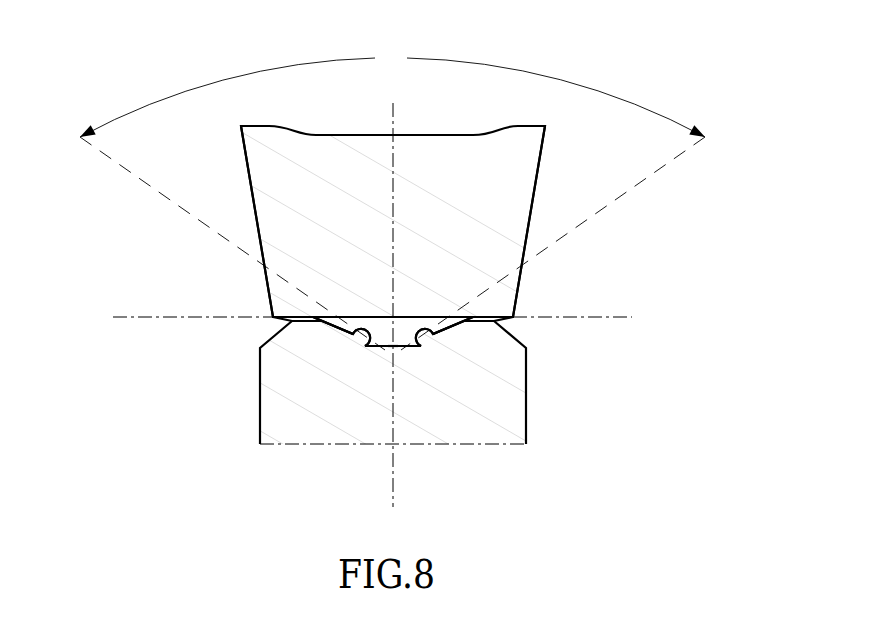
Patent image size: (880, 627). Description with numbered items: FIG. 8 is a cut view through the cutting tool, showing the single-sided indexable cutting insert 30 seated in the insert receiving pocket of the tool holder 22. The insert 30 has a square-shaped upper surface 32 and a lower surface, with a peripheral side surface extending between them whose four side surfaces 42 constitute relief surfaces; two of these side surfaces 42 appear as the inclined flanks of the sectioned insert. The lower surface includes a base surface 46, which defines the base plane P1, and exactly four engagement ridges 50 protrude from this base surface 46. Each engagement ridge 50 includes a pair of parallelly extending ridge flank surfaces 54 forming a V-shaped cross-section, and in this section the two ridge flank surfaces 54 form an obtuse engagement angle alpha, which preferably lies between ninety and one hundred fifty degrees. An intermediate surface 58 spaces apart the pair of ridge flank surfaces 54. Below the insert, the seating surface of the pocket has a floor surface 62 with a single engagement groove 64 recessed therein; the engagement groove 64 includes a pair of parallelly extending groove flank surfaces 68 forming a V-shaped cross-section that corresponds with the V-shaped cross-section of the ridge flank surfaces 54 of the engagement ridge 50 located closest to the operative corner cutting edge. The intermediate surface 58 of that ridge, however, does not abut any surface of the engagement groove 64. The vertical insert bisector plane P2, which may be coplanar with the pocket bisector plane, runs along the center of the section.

The tool holder 22 is at (463, 403).
The cutting insert 30 is at (500, 165).
The upper surface 32 is at (430, 133).
The side surfaces 42 is at (255, 217).
The base surface 46 is at (277, 318).
The engagement ridge 50 is at (375, 349).
The ridge flank surfaces 54 is at (355, 331).
The intermediate surface 58 is at (378, 356).
The floor surface 62 is at (313, 317).
The engagement groove 64 is at (402, 346).
The groove flank surfaces 68 is at (368, 347).
The base plane P1 is at (390, 317).
The vertical insert bisector plane P2 is at (393, 523).
The engagement angle alpha is at (392, 196).